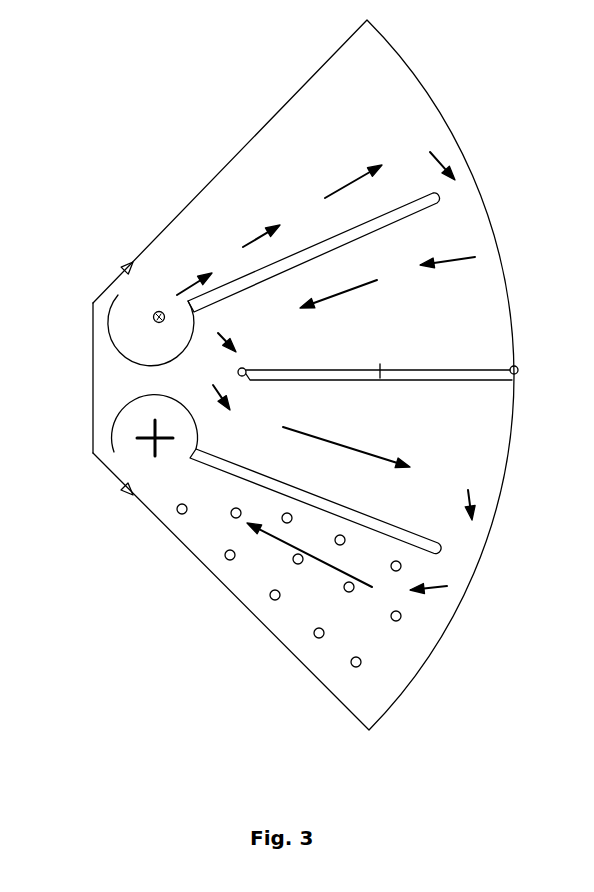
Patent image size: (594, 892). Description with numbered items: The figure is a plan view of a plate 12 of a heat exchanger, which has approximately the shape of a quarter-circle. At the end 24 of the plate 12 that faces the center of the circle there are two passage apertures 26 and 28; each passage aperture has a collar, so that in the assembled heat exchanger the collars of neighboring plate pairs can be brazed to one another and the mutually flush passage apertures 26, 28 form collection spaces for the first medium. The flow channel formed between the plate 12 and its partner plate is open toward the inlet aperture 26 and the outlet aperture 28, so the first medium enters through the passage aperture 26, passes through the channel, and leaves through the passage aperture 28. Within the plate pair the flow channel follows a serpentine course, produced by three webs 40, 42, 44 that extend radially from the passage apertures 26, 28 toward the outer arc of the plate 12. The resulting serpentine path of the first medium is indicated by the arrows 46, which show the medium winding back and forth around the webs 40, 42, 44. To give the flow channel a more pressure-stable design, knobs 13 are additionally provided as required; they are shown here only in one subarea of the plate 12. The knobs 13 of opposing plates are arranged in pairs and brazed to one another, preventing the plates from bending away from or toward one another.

The plate 12 is at (217, 175).
The knobs 13 is at (232, 562).
The end 24 is at (94, 385).
The passage aperture 26 is at (132, 315).
The passage aperture 28 is at (122, 437).
The web 40 is at (300, 253).
The web 42 is at (449, 370).
The web 44 is at (367, 517).
The arrows 46 is at (453, 259).